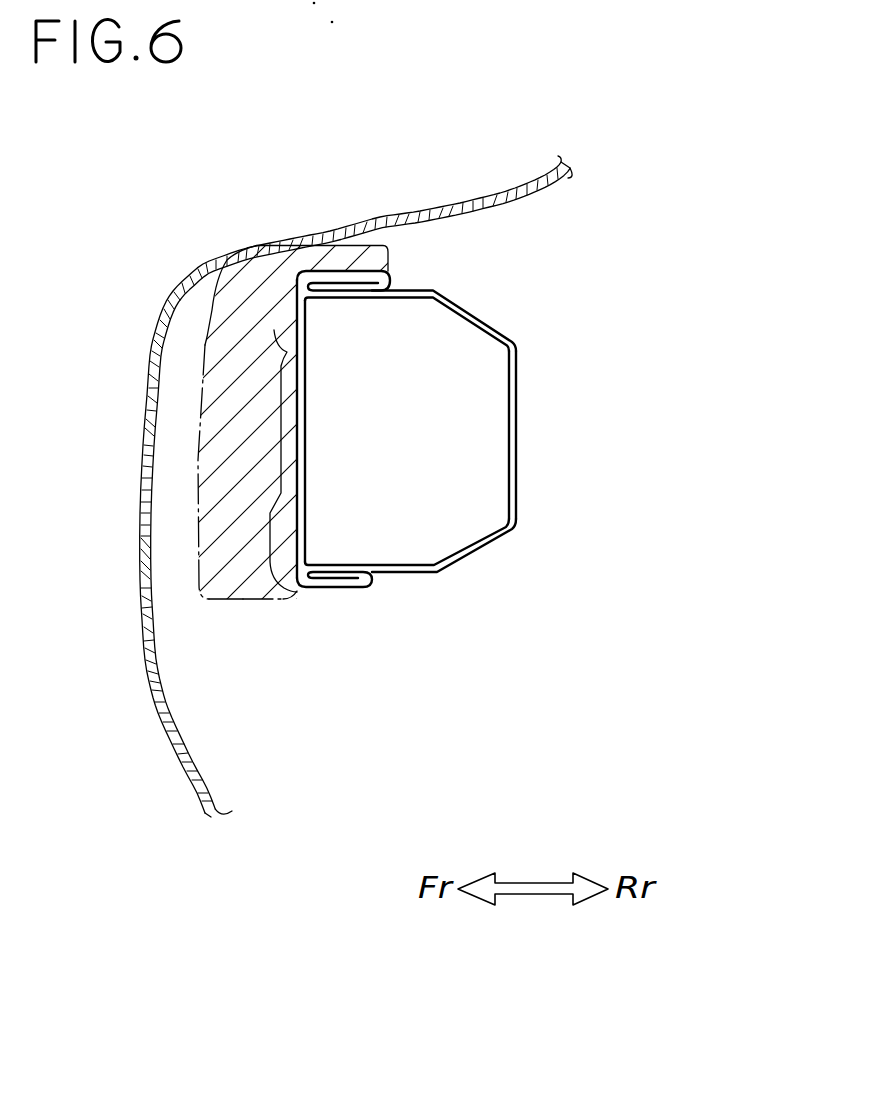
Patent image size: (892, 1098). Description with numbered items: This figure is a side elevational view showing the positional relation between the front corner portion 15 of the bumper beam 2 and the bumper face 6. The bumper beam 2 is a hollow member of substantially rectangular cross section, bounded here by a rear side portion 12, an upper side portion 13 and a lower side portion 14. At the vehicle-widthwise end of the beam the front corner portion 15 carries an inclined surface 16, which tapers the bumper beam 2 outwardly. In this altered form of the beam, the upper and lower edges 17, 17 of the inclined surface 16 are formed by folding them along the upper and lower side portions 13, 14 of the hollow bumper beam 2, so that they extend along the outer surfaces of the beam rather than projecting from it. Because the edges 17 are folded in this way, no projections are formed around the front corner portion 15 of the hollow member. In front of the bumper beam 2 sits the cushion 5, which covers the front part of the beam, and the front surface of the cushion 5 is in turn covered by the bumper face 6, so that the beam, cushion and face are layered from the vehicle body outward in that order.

The bumper beam 2 is at (447, 455).
The cushion 5 is at (198, 465).
The bumper face 6 is at (140, 517).
The rear side portion 12 is at (517, 452).
The upper side portion 13 is at (420, 291).
The lower side portion 14 is at (423, 577).
The front corner portion 15 is at (328, 399).
The inclined surface 16 is at (274, 330).
The upper and lower edges 17 is at (392, 276).